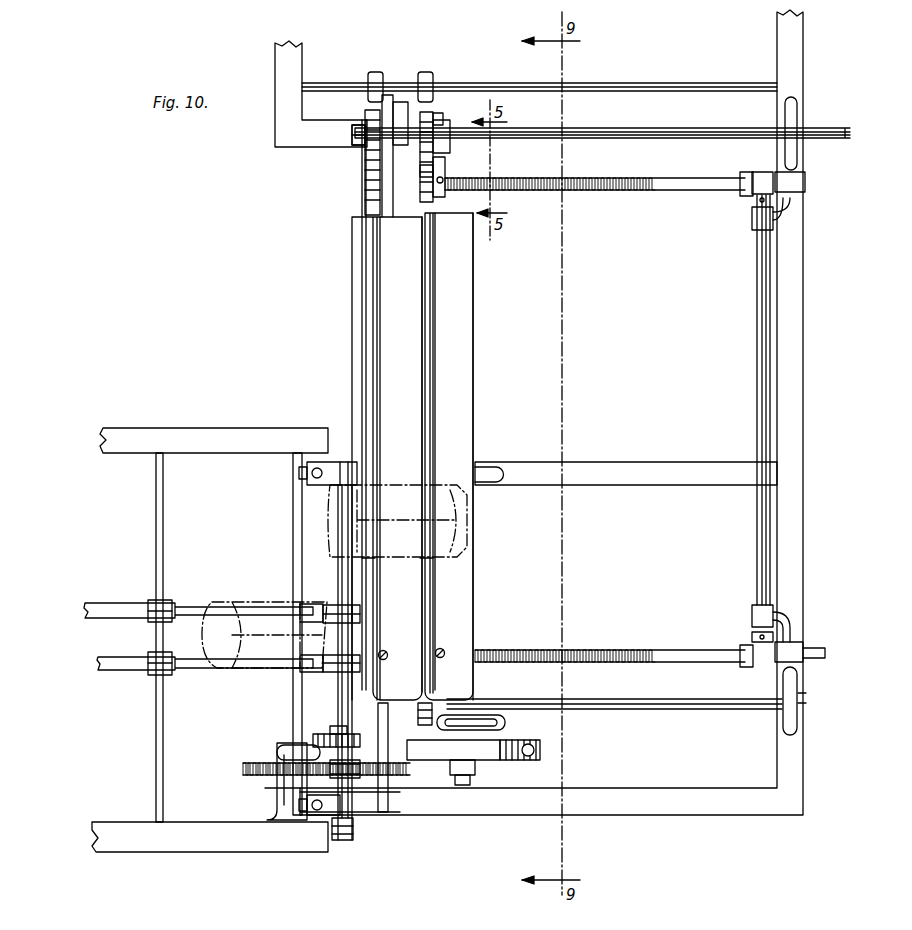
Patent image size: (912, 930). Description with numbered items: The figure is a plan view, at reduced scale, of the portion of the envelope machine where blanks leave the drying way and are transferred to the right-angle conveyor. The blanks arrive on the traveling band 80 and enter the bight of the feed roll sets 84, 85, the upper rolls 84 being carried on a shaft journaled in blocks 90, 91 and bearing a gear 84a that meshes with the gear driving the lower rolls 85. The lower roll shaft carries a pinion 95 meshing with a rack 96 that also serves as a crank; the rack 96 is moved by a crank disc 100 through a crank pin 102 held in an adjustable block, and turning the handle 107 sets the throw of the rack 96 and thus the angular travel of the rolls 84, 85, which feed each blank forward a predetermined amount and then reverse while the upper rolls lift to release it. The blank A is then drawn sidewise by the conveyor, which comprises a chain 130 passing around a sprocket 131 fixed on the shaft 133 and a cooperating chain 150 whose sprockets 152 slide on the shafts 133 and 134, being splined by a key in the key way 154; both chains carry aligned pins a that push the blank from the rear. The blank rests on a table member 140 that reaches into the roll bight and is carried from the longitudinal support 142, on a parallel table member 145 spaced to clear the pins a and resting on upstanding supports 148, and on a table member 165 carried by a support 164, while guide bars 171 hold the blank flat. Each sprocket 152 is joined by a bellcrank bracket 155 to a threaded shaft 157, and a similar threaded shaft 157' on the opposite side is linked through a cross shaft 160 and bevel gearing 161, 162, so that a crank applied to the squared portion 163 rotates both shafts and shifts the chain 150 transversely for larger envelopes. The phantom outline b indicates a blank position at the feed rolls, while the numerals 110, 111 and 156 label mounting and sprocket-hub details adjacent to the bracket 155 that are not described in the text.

The traveling band 80 is at (135, 618).
The upper feed roll 84 is at (358, 612).
The gear 84a is at (332, 741).
The lower feed roll 85 is at (322, 611).
The block 90 is at (346, 838).
The block 91 is at (337, 462).
The pinion 95 is at (357, 772).
The rack 96 is at (258, 776).
The crank disc 100 is at (490, 760).
The crank pin 102 is at (465, 784).
The handle 107 is at (517, 762).
The lower bracket 110 is at (318, 812).
The pivot pin 111 is at (316, 468).
The chain 130 is at (363, 207).
The sprocket 131 is at (372, 110).
The shaft 133 is at (538, 128).
The shaft 134 is at (592, 712).
The table member 140 is at (357, 372).
The longitudinal support 142 is at (372, 158).
The table member 145 is at (383, 268).
The upstanding support 148 is at (412, 195).
The chain 150 is at (440, 118).
The sprocket 152 is at (427, 113).
The key way 154 is at (620, 128).
The bracket 155 is at (443, 165).
The sprocket 156 is at (437, 172).
The threaded shaft 157 is at (599, 201).
The threaded shaft 157' is at (614, 633).
The cross shaft 160 is at (760, 388).
The bevel gearing 161 is at (748, 200).
The bevel gearing 162 is at (742, 632).
The squared portion 163 is at (818, 645).
The support 164 is at (445, 190).
The table member 165 is at (468, 390).
The guide bar 171 is at (363, 305).
The blank A is at (405, 488).
The pin a is at (370, 562).
The phantom article b is at (205, 648).